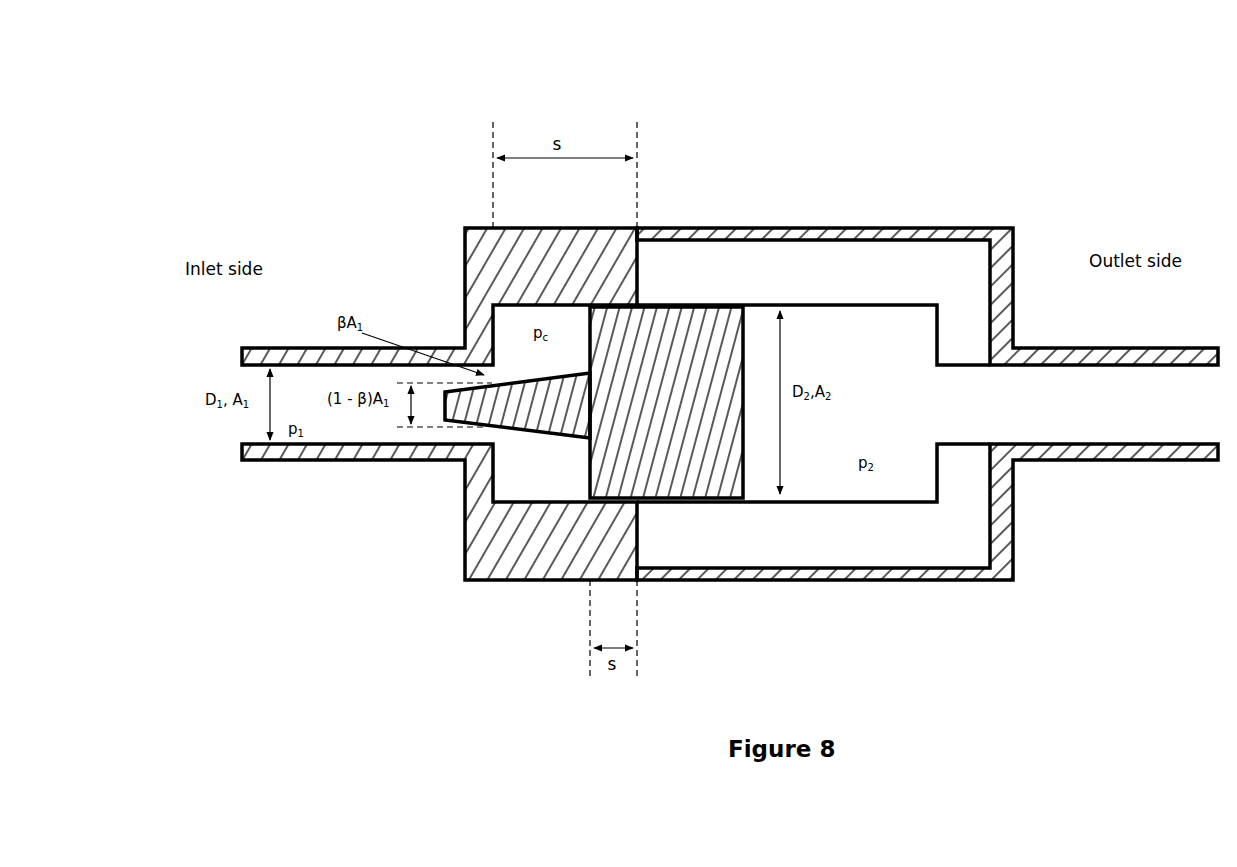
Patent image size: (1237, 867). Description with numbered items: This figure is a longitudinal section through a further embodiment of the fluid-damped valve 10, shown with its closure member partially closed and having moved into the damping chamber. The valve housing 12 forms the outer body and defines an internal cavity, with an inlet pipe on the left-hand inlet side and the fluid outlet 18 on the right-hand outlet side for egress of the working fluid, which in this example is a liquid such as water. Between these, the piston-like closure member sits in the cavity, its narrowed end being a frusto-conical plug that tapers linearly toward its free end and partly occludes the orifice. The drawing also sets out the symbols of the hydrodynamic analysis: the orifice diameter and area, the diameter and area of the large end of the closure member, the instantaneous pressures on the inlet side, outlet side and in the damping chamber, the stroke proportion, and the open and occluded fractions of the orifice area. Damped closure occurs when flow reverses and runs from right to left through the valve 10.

The fluid-damped valve 10 is at (730, 316).
The valve housing 12 is at (710, 228).
The fluid outlet 18 is at (1122, 406).